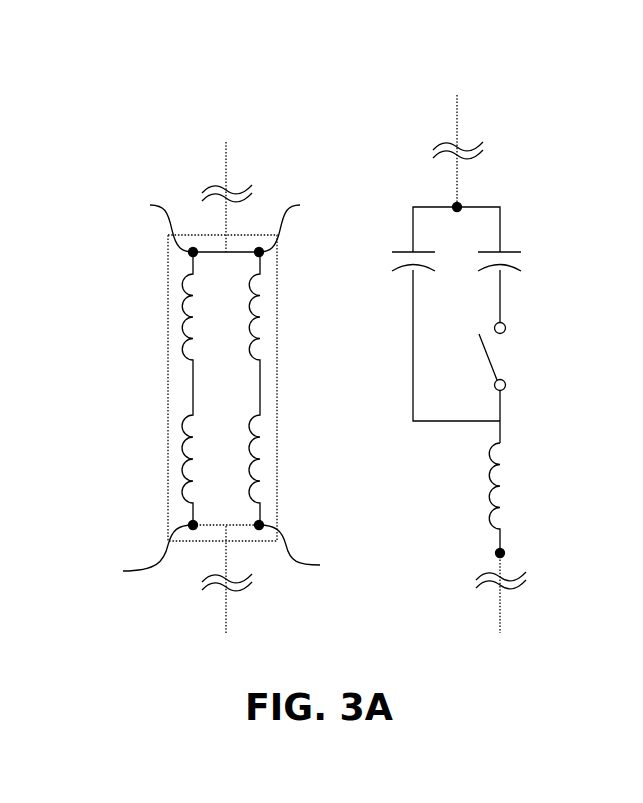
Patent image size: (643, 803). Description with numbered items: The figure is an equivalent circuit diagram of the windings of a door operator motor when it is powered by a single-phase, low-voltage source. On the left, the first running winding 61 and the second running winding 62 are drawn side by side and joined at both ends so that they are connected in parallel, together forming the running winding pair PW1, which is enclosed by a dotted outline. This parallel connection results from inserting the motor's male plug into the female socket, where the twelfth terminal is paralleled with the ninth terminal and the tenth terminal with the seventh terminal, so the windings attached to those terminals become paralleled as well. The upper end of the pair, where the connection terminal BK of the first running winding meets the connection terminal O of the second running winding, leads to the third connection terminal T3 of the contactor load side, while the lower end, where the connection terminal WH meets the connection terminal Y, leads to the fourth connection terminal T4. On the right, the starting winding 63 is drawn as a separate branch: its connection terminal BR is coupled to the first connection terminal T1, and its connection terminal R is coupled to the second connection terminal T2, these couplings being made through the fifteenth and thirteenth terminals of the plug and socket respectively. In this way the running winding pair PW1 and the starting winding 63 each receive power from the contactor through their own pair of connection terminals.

The first running winding 61 is at (186, 392).
The second running winding 62 is at (270, 390).
The starting winding 63 is at (524, 356).
The running winding pair PW1 is at (168, 331).
The first connection terminal T1 is at (458, 138).
The second connection terminal T2 is at (501, 610).
The third connection terminal T3 is at (227, 181).
The fourth connection terminal T4 is at (227, 595).
The connection terminal of the first running winding BK is at (154, 221).
The connection terminal of the second running winding O is at (290, 221).
The connection terminal of the first running winding WH is at (136, 553).
The connection terminal of the second running winding Y is at (297, 550).
The connection terminal of the starting winding BR is at (460, 205).
The connection terminal of the starting winding R is at (504, 552).